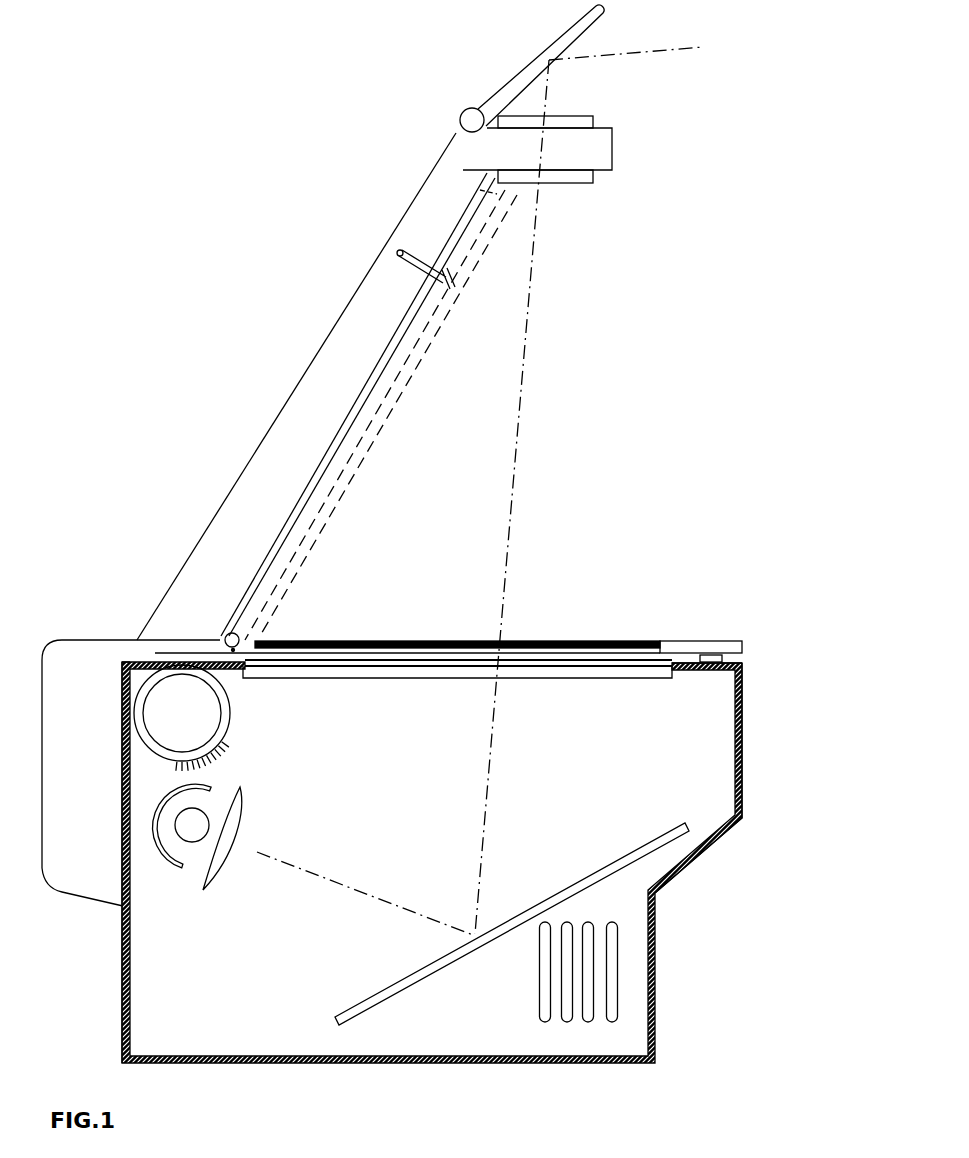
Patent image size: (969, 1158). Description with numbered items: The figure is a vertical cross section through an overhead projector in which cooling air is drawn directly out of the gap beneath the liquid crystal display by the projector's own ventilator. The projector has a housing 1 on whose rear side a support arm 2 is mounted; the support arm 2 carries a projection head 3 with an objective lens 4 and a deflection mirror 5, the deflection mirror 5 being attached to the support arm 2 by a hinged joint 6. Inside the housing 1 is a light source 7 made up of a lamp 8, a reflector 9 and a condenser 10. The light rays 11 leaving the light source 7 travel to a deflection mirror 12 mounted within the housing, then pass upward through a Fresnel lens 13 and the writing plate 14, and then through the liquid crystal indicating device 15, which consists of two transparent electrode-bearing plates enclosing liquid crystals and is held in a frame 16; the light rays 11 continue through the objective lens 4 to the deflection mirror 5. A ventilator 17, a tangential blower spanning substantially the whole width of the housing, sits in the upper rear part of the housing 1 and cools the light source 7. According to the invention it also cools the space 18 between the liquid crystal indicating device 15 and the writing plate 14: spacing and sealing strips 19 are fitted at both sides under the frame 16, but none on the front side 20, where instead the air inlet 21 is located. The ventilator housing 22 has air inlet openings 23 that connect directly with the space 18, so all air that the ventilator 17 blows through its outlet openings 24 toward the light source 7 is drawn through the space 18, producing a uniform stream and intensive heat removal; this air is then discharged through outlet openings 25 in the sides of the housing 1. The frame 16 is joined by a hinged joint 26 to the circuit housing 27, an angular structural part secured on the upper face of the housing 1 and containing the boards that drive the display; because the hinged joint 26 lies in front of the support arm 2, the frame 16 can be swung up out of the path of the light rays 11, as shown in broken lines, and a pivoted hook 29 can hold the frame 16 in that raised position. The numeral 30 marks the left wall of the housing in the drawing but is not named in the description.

The housing 1 is at (260, 1003).
The support arm 2 is at (310, 403).
The projection head 3 is at (593, 145).
The objective lens 4 is at (563, 178).
The deflection mirror 5 is at (552, 43).
The hinged joint 6 is at (466, 117).
The light source 7 is at (142, 881).
The lamp 8 is at (185, 828).
The reflector 9 is at (152, 822).
The condenser 10 is at (220, 835).
The light rays 11 is at (523, 428).
The deflection mirror 12 is at (428, 968).
The Fresnel lens 13 is at (408, 677).
The writing plate 14 is at (455, 667).
The liquid crystal indicating device 15 is at (347, 645).
The frame 16 is at (670, 648).
The ventilator 17 is at (157, 713).
The space 18 is at (375, 660).
The spacing and sealing strips 19 is at (706, 660).
The front side 20 is at (735, 818).
The air inlet 21 is at (751, 658).
The ventilator housing 22 is at (127, 666).
The air inlet openings 23 is at (158, 662).
The outlet openings 24 is at (165, 770).
The outlet openings 25 is at (588, 1020).
The hinged joint 26 is at (240, 628).
The circuit housing 27 is at (77, 693).
The pivoted hook 29 is at (452, 281).
The left side wall 30 is at (125, 1001).